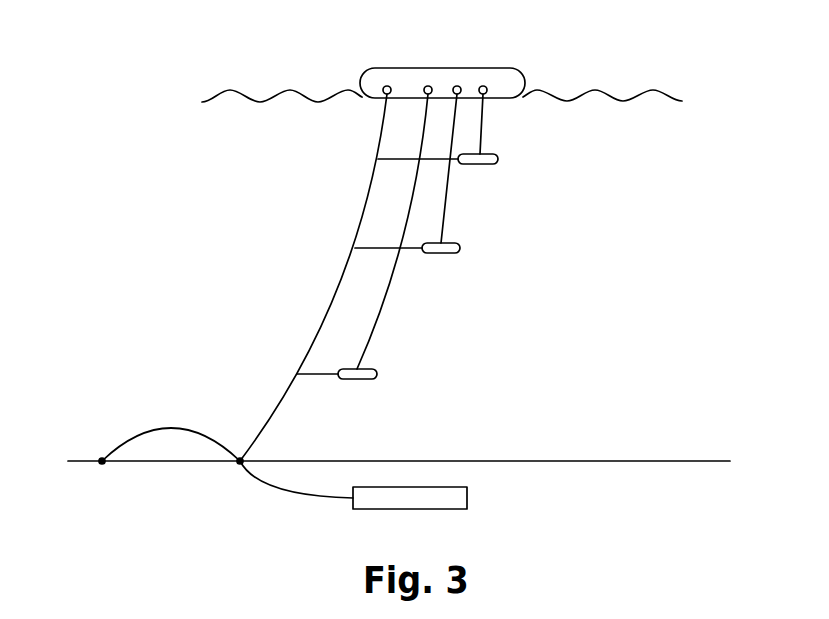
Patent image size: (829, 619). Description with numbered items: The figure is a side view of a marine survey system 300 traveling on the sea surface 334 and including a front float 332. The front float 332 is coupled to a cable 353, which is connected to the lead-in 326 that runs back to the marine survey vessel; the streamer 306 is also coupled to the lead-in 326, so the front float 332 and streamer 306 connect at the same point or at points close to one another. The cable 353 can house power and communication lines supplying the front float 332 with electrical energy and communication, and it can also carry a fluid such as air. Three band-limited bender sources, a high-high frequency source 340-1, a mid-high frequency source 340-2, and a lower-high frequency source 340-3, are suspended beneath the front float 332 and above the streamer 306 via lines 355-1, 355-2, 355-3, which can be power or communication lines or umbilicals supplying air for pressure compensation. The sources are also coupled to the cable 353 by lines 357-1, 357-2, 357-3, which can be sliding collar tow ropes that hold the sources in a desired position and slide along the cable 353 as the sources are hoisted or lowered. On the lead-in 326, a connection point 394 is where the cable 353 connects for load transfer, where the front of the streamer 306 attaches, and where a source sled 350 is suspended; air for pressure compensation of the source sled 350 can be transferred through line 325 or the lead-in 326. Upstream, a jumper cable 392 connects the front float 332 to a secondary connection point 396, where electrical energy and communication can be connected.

The marine survey system 300 is at (258, 44).
The front float 332 is at (445, 79).
The sea surface 334 is at (618, 99).
The streamer 306 is at (590, 460).
The cable 353 is at (330, 308).
The line 355-1 is at (483, 120).
The line 355-2 is at (447, 202).
The line 355-3 is at (387, 305).
The line 357-1 is at (398, 160).
The line 357-2 is at (382, 248).
The line 357-3 is at (326, 373).
The source 340-1 is at (498, 160).
The source 340-2 is at (460, 248).
The source 340-3 is at (377, 374).
The cable 392 is at (172, 429).
The connection point 396 is at (102, 460).
The connection point 394 is at (242, 465).
The lead-in 326 is at (168, 464).
The line 325 is at (302, 494).
The source sled 350 is at (415, 510).